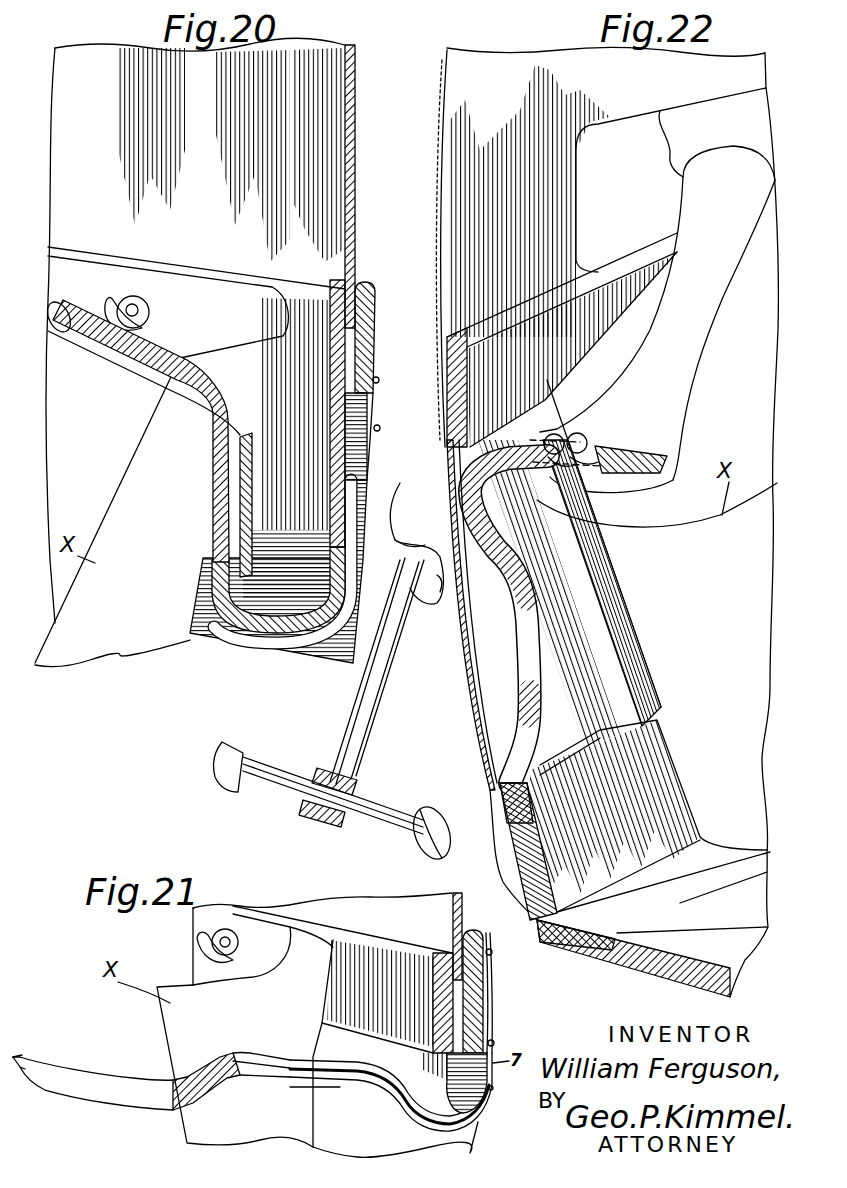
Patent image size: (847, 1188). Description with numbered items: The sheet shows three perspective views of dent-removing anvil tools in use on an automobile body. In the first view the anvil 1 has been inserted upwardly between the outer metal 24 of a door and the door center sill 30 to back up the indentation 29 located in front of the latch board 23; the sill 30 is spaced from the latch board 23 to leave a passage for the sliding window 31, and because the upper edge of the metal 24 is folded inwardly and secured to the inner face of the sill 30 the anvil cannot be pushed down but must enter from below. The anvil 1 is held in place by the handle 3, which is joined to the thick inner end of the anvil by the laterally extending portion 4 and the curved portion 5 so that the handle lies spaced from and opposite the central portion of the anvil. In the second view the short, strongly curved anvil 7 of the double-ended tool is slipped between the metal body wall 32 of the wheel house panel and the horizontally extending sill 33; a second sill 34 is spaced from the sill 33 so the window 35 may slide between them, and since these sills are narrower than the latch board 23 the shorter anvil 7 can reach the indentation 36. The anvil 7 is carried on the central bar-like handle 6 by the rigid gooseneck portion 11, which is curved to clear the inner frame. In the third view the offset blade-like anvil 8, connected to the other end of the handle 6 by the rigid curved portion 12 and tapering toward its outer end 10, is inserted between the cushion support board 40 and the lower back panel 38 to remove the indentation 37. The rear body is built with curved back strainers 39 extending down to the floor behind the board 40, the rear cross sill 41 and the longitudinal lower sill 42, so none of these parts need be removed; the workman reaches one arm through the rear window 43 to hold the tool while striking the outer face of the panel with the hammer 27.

In FIG. 20, the anvil 1 is at (368, 418).
In FIG. 20, the handle 3 is at (130, 370).
In FIG. 20, the laterally extending portion 4 is at (212, 468).
In FIG. 20, the curved portion 5 is at (253, 627).
In FIG. 22, the handle 6 is at (533, 627).
In FIG. 21, the handle 6 is at (340, 1087).
In FIG. 22, the anvil 7 is at (616, 488).
In FIG. 22, the anvil 8 is at (497, 845).
In FIG. 21, the anvil 8 is at (93, 1073).
In FIG. 21, the flange end 10 is at (20, 1056).
In FIG. 21, the gooseneck portion 11 is at (443, 1120).
In FIG. 21, the curved portion 12 is at (203, 1097).
In FIG. 20, the latch board 23 is at (343, 320).
In FIG. 20, the outer metal 24 is at (373, 492).
In FIG. 22, the hammer 27 is at (373, 823).
In FIG. 20, the indentation 29 is at (378, 434).
In FIG. 20, the door center sill 30 is at (370, 342).
In FIG. 20, the sliding window 31 is at (357, 145).
In FIG. 21, the metal body wall 32 is at (493, 1088).
In FIG. 21, the sill 33 is at (490, 1010).
In FIG. 21, the second sill 34 is at (433, 950).
In FIG. 21, the window 35 is at (461, 920).
In FIG. 21, the indentation 36 is at (481, 982).
In FIG. 22, the indentation 37 is at (483, 820).
In FIG. 22, the lower back panel 38 is at (472, 760).
In FIG. 22, the back strainers 39 is at (587, 633).
In FIG. 22, the cushion support board 40 is at (660, 717).
In FIG. 22, the rear cross sill 41 is at (722, 886).
In FIG. 22, the longitudinal lower sill 42 is at (705, 978).
In FIG. 22, the rear window 43 is at (577, 188).